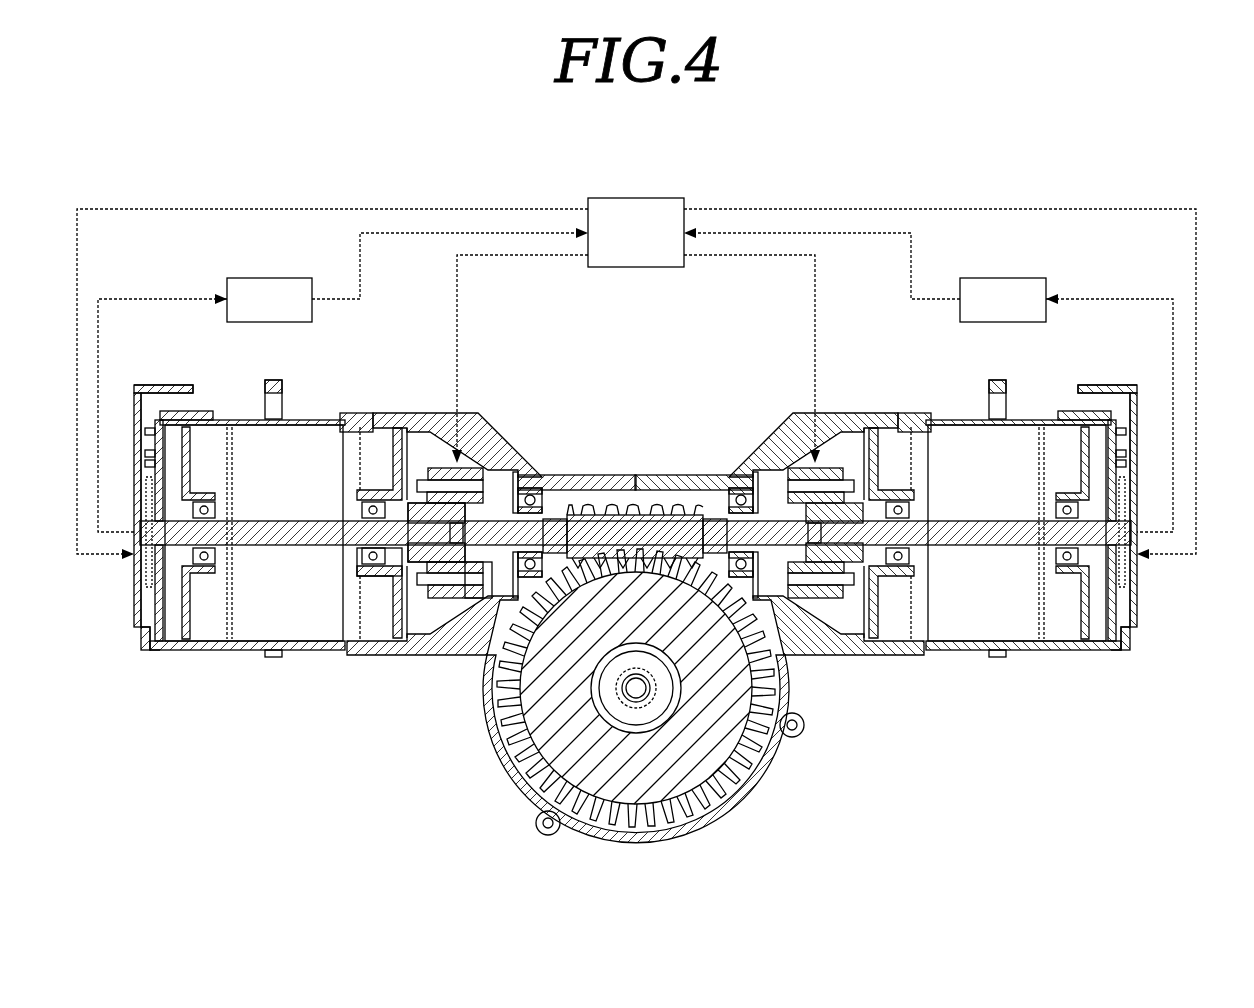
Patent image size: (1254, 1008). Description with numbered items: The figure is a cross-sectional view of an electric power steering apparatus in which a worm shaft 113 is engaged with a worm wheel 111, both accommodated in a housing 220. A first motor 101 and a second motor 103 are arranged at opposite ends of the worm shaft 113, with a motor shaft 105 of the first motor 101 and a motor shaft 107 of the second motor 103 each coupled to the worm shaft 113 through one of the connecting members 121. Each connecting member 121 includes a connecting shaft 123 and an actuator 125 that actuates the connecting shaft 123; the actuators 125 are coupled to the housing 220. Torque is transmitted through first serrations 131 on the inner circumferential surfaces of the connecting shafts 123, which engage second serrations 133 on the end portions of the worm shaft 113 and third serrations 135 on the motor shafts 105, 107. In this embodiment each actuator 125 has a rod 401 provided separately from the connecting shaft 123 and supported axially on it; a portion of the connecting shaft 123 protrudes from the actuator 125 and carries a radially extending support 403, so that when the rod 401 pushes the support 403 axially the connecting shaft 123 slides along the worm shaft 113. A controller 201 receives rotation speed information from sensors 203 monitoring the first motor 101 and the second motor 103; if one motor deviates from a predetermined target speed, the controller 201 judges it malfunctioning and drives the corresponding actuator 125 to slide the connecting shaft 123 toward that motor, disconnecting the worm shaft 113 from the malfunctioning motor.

The first motor 101 is at (212, 660).
The second motor 103 is at (1060, 660).
The motor shaft 105 is at (177, 542).
The motor shaft 107 is at (1095, 542).
The worm wheel 111 is at (641, 838).
The worm shaft 113 is at (645, 520).
The connecting members 121 is at (634, 461).
The connecting shaft 123 is at (497, 515).
The actuator 125 is at (468, 465).
The first serrations 131 is at (420, 575).
The second serrations 133 is at (485, 595).
The third serrations 135 is at (395, 575).
The controller 201 is at (633, 197).
The sensors 203 is at (268, 277).
The housing 220 is at (606, 475).
The rod 401 is at (440, 467).
The support 403 is at (386, 462).